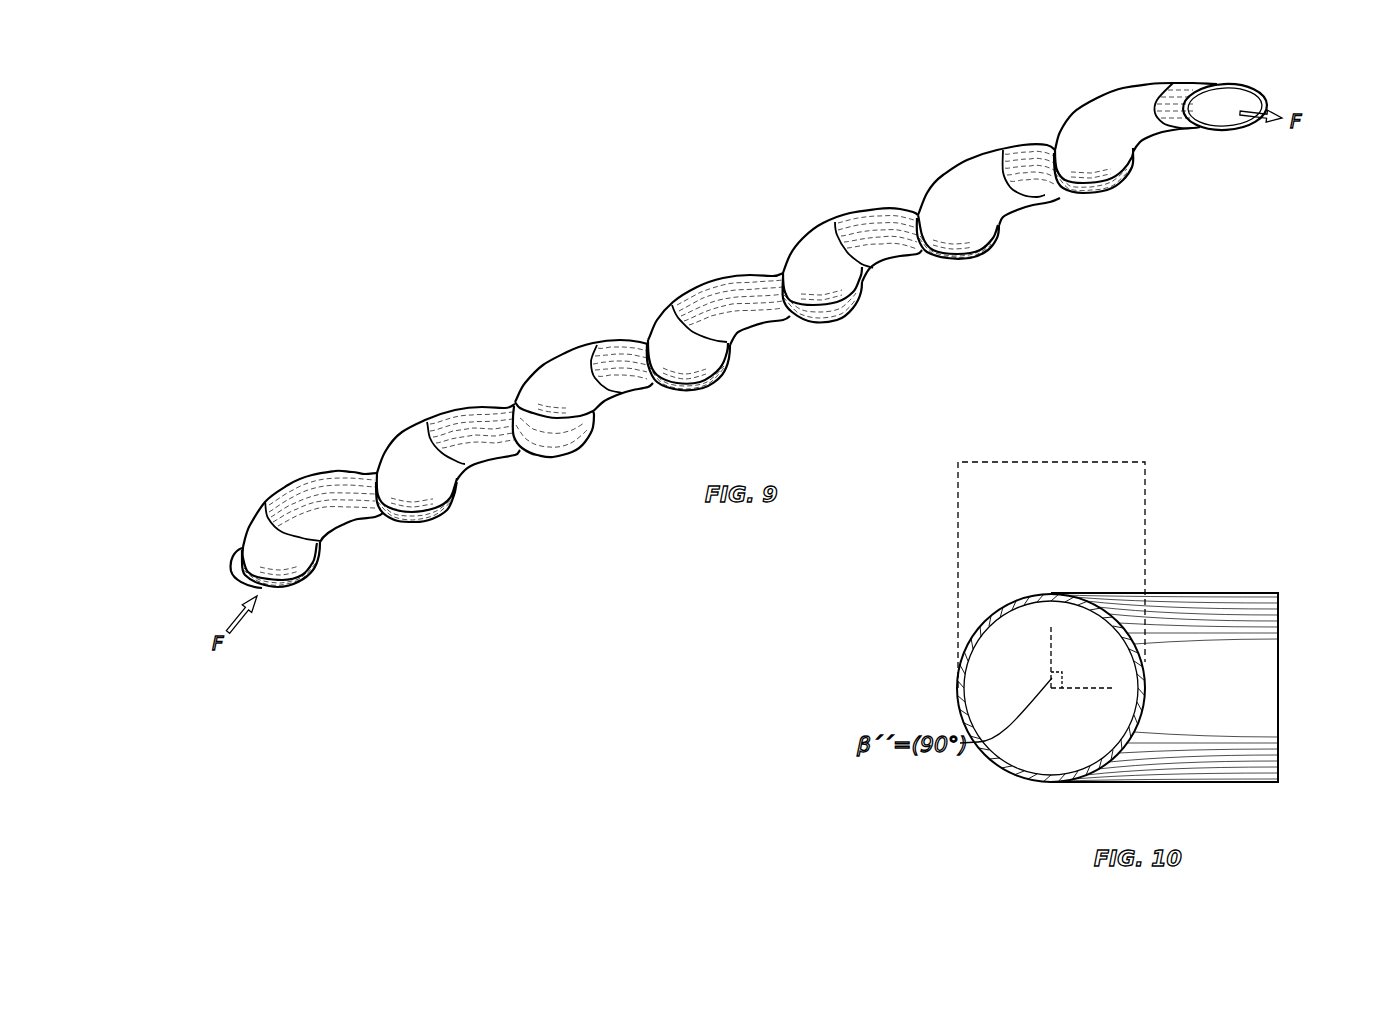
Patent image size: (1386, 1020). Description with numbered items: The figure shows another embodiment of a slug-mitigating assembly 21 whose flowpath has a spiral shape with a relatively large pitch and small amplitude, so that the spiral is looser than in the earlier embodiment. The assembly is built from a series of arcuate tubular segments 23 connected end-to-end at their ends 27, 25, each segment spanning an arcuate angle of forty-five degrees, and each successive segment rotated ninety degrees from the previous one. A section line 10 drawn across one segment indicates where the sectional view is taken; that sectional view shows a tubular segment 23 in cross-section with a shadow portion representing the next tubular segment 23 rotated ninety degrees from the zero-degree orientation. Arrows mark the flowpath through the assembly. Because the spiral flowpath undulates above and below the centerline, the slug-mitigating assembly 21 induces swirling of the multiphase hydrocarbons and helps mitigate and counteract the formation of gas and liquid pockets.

In FIG. 9, the slug-mitigating assembly 21 is at (565, 166).
In FIG. 9, the tubular segment 23 is at (857, 232).
In FIG. 10, the tubular segment 23 is at (1101, 462).
In FIG. 9, the end of tubular segment 25 is at (913, 213).
In FIG. 10, the end of tubular segment 25 is at (1283, 682).
In FIG. 9, the end of tubular segment 27 is at (880, 263).
In FIG. 10, the end of tubular segment 27 is at (957, 686).
In FIG. 9, the section line 10- 10 is at (930, 319).